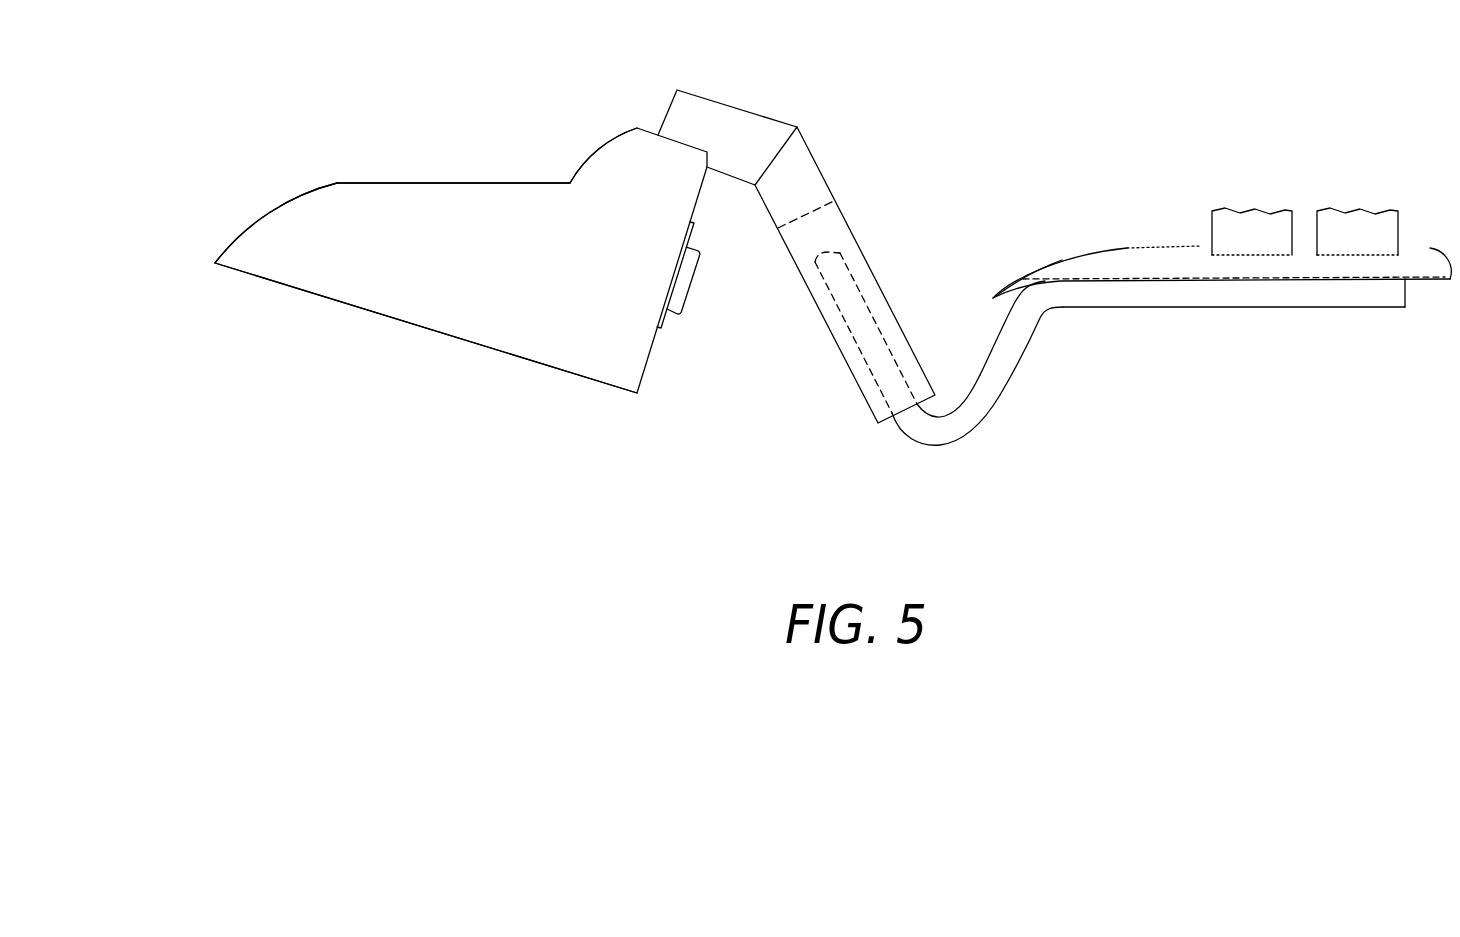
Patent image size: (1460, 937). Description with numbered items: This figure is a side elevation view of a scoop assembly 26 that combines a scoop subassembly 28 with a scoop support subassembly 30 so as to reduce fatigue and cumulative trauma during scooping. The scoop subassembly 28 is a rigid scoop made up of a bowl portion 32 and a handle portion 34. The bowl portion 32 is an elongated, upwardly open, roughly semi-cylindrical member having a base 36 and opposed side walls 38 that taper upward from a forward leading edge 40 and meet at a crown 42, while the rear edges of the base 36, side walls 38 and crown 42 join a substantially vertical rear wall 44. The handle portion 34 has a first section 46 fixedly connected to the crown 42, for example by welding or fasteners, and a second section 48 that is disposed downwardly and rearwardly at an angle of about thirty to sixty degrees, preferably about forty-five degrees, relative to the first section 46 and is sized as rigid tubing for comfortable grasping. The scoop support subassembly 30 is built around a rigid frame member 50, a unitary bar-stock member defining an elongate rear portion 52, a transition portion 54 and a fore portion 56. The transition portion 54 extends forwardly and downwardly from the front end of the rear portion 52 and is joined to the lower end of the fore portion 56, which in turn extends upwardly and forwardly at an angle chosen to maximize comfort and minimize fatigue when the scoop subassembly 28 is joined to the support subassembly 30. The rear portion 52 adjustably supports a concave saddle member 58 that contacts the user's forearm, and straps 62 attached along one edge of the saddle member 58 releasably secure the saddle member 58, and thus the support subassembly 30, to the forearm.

The scoop assembly 26 is at (1171, 313).
The scoop subassembly 28 is at (846, 248).
The scoop support subassembly 30 is at (999, 385).
The bowl portion 32 is at (460, 176).
The handle portion 34 is at (742, 101).
The base 36 is at (388, 318).
The side walls 38 is at (467, 315).
The leading edge 40 is at (215, 263).
The crown 42 is at (650, 130).
The rear wall 44 is at (647, 366).
The first section 46 is at (733, 125).
The second section 48 is at (820, 192).
The rigid frame member 50 is at (1092, 317).
The rear portion 52 is at (1234, 332).
The transition portion 54 is at (965, 427).
The fore portion 56 is at (852, 297).
The saddle member 58 is at (1173, 260).
The straps 62 is at (1252, 222).